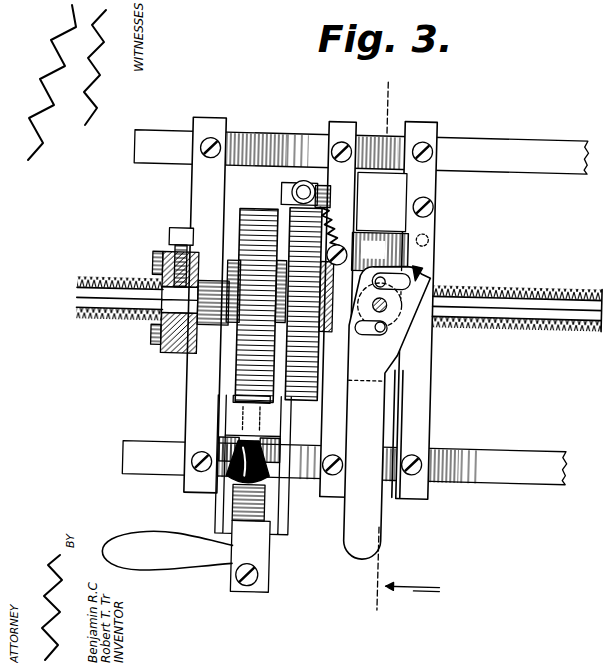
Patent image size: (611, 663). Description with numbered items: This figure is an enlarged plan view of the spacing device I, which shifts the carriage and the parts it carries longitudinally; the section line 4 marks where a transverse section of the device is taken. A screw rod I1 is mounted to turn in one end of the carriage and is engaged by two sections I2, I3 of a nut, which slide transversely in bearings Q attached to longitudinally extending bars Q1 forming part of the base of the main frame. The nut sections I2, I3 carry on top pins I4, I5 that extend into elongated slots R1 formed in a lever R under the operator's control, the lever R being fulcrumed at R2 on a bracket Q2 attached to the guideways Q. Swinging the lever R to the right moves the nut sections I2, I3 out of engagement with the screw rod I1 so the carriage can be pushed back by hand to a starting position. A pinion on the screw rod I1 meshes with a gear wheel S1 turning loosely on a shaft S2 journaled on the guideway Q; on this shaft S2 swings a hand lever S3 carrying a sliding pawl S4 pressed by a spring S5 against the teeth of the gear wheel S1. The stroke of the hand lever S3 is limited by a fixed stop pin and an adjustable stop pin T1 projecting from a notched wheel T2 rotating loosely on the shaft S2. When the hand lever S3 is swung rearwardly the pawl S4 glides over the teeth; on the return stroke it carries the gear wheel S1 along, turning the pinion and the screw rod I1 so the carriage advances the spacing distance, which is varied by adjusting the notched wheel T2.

The spacing device I is at (307, 176).
The screw rod I1 is at (107, 284).
The nut section I2 is at (378, 247).
The nut section I3 is at (405, 366).
The pin I4 is at (300, 191).
The pin I5 is at (378, 332).
The bearing Q is at (194, 417).
The longitudinally extending bar Q1 is at (527, 147).
The bracket Q2 is at (432, 267).
The lever R is at (373, 523).
The elongated slot R1 is at (376, 279).
The fulcrum R2 is at (387, 309).
The gear wheel S1 is at (257, 215).
The shaft S2 is at (184, 357).
The hand lever S3 is at (236, 431).
The sliding pawl S4 is at (275, 444).
The spring S5 is at (268, 519).
The stop pin T1 is at (273, 319).
The notched wheel T2 is at (306, 384).
The section line 4 is at (413, 353).